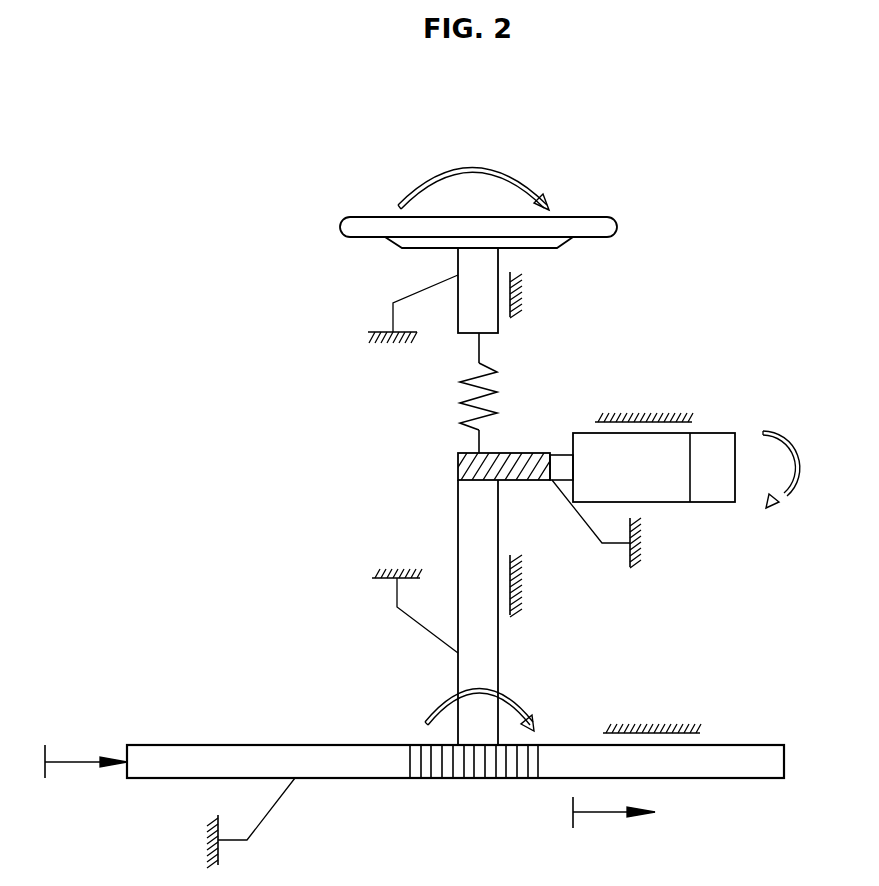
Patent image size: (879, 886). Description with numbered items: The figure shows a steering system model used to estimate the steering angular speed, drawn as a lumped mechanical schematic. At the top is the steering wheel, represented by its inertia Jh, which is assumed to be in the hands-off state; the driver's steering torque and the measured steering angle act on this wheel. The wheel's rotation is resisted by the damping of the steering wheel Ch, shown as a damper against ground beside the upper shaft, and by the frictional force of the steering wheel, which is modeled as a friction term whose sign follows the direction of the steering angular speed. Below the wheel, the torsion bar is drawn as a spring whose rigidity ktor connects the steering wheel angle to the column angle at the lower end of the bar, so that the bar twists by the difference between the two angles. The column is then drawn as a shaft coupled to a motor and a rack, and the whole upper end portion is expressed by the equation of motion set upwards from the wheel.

The inertia of the steering wheel Jh is at (495, 232).
The damping of the steering wheel Ch is at (532, 295).
The rigidity of the torsion bar ktor is at (503, 393).